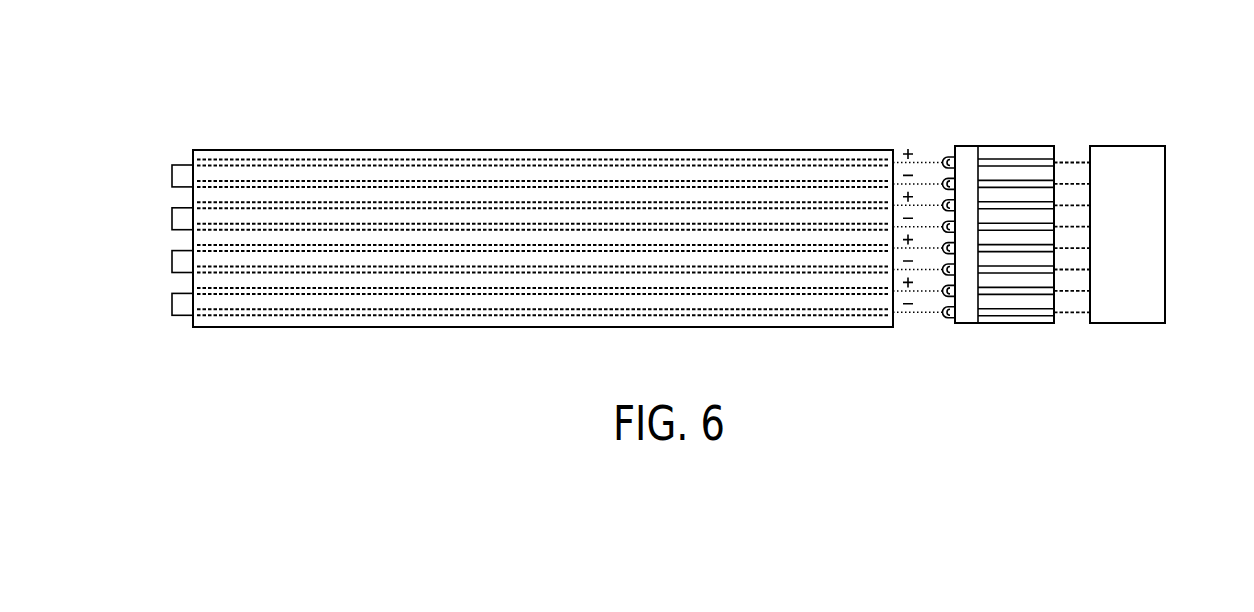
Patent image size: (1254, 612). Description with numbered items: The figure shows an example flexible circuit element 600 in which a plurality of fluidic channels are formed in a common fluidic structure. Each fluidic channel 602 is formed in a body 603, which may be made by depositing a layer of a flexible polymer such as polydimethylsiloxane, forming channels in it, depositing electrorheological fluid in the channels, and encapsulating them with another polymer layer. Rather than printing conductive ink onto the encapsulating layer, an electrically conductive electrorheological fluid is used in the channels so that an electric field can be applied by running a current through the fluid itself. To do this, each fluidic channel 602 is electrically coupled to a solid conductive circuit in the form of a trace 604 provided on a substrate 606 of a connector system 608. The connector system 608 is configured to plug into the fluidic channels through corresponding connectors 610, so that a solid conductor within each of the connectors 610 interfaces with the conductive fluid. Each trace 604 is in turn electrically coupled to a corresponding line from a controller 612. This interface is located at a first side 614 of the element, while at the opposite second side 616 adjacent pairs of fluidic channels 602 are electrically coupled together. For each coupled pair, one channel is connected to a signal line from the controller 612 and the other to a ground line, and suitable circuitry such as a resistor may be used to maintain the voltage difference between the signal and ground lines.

The flexible circuit element 600 is at (453, 97).
The fluidic channel 602 is at (530, 161).
The body 603 is at (265, 150).
The trace 604 is at (1019, 165).
The substrate 606 is at (1032, 323).
The connector system 608 is at (966, 312).
The connector 610 is at (945, 157).
The controller 612 is at (1109, 247).
The first side 614 is at (908, 328).
The second side 616 is at (178, 332).